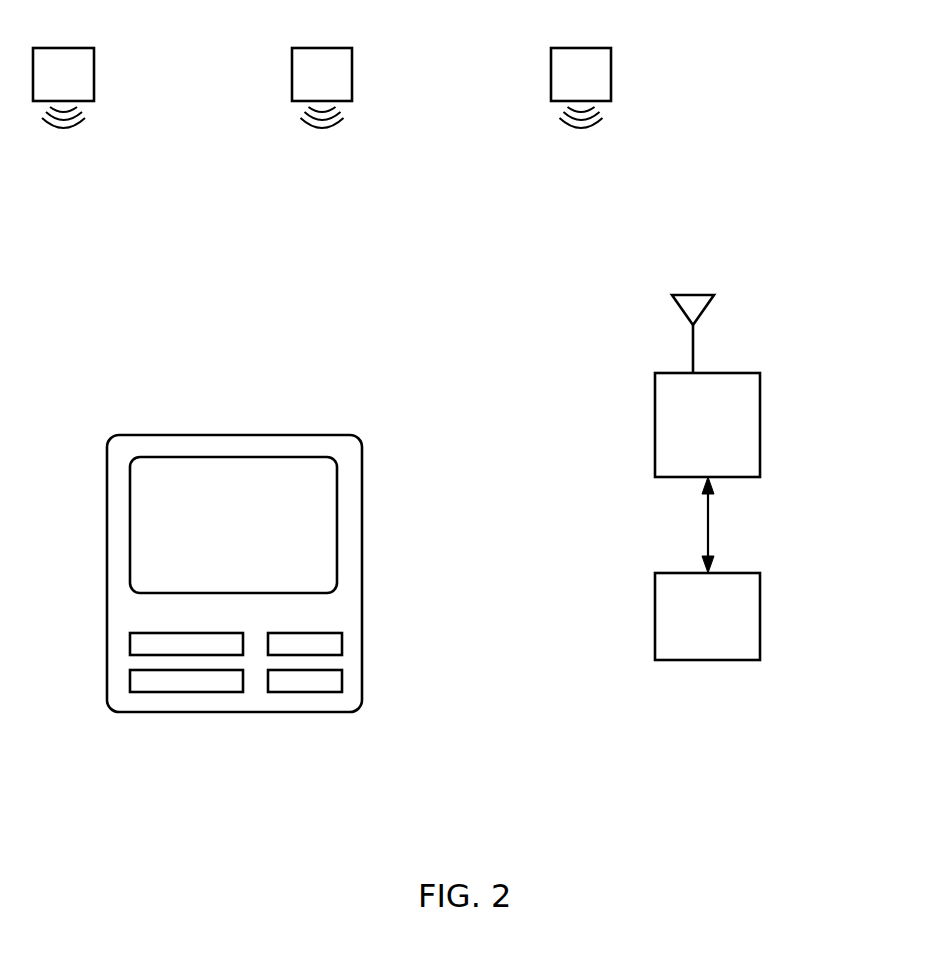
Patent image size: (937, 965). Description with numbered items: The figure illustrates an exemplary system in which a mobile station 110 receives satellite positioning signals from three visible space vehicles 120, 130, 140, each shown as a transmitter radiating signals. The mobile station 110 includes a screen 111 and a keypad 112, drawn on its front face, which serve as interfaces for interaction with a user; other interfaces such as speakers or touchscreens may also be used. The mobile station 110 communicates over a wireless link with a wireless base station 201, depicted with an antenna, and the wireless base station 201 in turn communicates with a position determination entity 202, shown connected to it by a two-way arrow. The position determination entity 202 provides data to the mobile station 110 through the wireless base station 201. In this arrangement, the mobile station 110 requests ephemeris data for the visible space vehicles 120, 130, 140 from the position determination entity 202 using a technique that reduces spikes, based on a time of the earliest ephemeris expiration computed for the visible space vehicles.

The mobile station 110 is at (237, 557).
The screen 111 is at (150, 593).
The keypad 112 is at (285, 633).
The space vehicle 120 is at (63, 48).
The space vehicle 130 is at (322, 48).
The space vehicle 140 is at (581, 48).
The wireless base station 201 is at (733, 373).
The position determination entity 202 is at (733, 573).